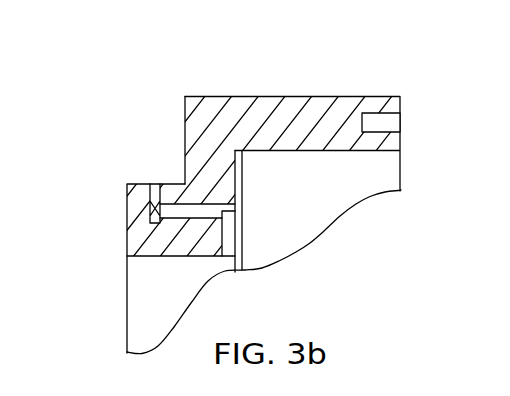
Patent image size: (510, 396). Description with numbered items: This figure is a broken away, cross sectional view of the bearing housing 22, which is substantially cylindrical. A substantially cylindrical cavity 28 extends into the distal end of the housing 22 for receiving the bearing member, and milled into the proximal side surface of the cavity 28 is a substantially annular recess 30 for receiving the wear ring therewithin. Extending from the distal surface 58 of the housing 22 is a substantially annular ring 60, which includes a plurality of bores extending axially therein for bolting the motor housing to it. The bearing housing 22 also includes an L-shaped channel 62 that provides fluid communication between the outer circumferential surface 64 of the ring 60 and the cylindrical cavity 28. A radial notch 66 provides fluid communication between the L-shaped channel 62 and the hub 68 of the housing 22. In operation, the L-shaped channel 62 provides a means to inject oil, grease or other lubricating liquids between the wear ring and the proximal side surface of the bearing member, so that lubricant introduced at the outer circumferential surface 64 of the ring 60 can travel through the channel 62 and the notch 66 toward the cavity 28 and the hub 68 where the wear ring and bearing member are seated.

The bearing housing 22 is at (335, 100).
The cylindrical cavity 28 is at (348, 165).
The annular recess 30 is at (229, 158).
The distal surface 58 is at (176, 107).
The annular ring 60 is at (122, 175).
The L-shaped channel 62 is at (192, 219).
The outer circumferential surface 64 is at (169, 174).
The radial notch 66 is at (238, 234).
The hub 68 is at (210, 267).